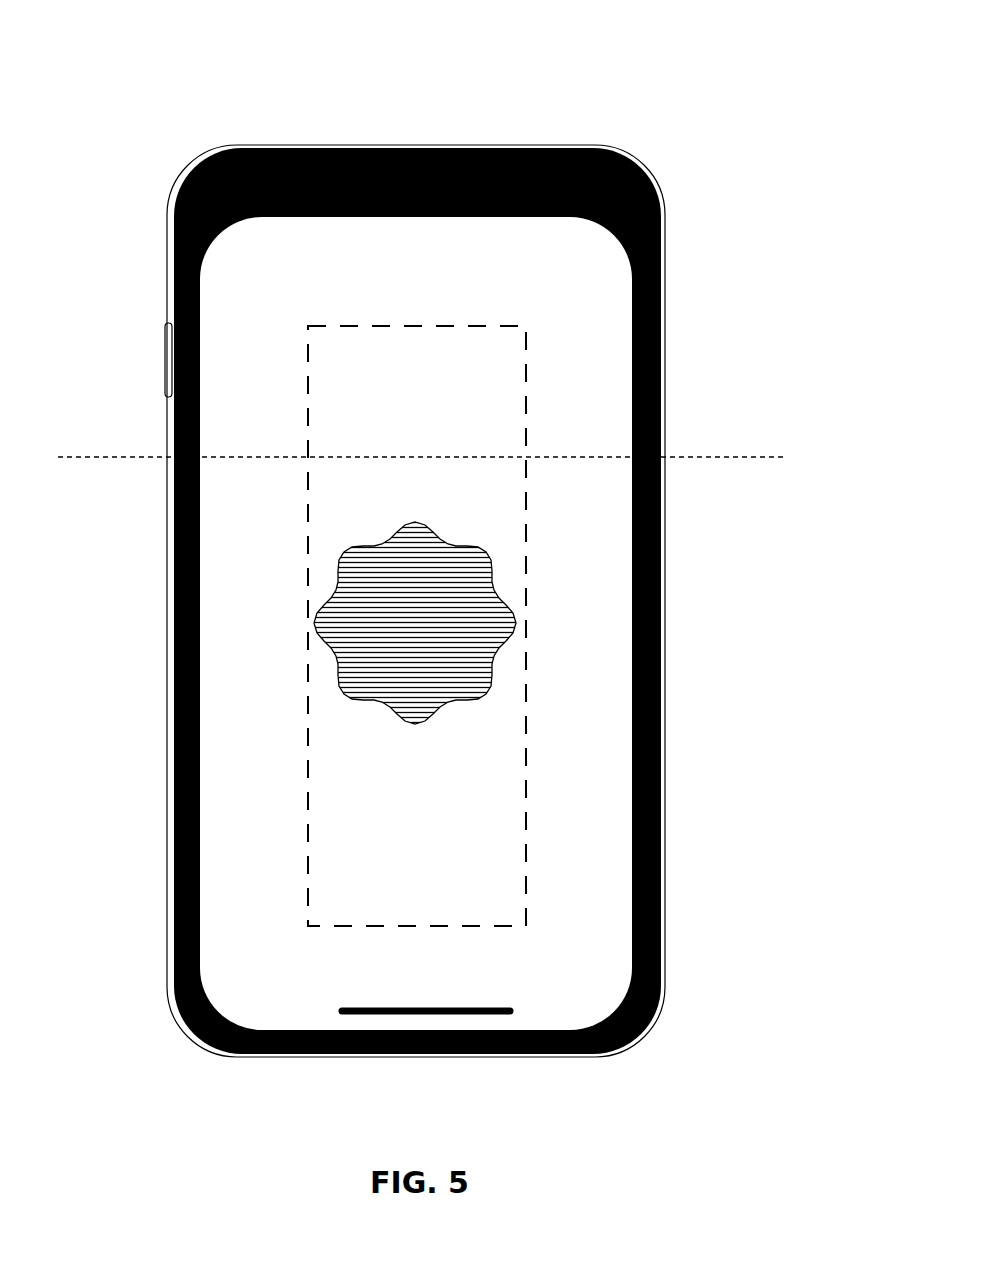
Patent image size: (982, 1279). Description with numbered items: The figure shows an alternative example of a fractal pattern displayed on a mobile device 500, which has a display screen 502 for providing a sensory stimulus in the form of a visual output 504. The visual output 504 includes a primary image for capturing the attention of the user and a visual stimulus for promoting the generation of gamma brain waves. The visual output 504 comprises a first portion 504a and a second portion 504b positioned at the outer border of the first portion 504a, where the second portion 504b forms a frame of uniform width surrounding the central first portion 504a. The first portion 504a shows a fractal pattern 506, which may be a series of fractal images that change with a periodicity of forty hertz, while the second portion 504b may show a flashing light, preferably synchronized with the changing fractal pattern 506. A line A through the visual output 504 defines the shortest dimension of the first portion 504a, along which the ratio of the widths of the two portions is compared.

The mobile device 500 is at (428, 64).
The display screen 502 is at (247, 300).
The visual output 504 is at (597, 332).
The first portion 504a is at (590, 645).
The second portion 504b is at (476, 813).
The fractal pattern 506 is at (340, 673).
The line A is at (745, 457).